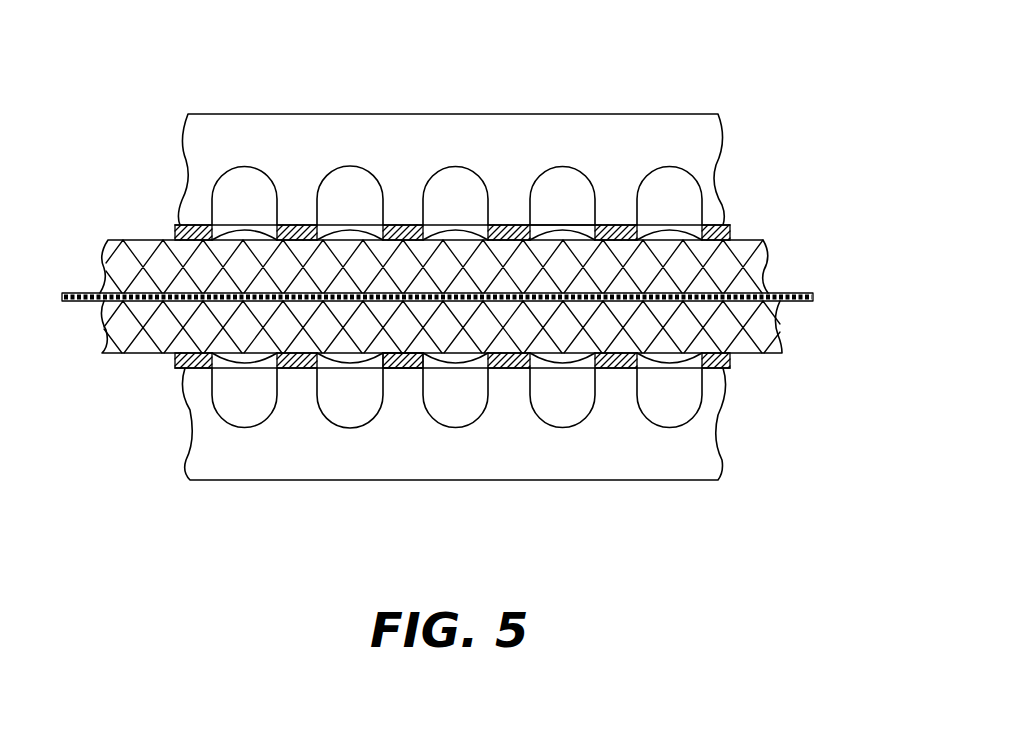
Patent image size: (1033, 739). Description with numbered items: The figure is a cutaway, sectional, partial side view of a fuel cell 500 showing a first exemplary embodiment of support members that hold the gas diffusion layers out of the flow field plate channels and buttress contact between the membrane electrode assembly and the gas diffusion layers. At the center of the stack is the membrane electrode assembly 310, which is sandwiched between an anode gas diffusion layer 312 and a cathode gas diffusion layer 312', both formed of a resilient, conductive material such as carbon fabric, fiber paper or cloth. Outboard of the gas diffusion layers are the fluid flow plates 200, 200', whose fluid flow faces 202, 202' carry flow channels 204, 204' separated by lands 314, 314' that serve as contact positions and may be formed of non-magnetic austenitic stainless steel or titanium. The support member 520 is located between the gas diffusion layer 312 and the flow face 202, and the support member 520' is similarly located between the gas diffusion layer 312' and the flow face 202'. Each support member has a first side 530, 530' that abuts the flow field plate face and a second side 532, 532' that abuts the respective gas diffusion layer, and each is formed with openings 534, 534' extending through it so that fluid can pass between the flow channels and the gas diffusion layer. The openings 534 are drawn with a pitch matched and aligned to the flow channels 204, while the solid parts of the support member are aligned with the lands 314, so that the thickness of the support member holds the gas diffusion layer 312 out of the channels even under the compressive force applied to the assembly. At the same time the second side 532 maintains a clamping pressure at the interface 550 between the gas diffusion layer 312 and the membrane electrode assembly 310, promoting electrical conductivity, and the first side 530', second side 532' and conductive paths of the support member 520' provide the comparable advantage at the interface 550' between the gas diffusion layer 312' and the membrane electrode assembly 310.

The fuel cell 500 is at (78, 77).
The fluid flow plate 200 is at (452, 468).
The fluid flow plate 200' is at (452, 145).
The fluid flow face 202 is at (411, 468).
The fluid flow face 202' is at (415, 145).
The flow channel 204 is at (457, 475).
The flow channel 204' is at (457, 137).
The membrane electrode assembly 310 is at (813, 296).
The gas diffusion layer 312 is at (460, 442).
The gas diffusion layer 312' is at (463, 171).
The land 314 is at (272, 468).
The land 314' is at (538, 145).
The support member 520 is at (159, 468).
The support member 520' is at (213, 145).
The first side 530 is at (605, 468).
The first side 530' is at (667, 145).
The second side 532 is at (560, 346).
The second side 532' is at (564, 237).
The opening 534 is at (699, 468).
The opening 534' is at (596, 137).
The interface 550 is at (506, 326).
The interface 550' is at (511, 266).